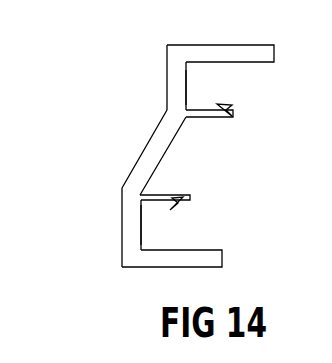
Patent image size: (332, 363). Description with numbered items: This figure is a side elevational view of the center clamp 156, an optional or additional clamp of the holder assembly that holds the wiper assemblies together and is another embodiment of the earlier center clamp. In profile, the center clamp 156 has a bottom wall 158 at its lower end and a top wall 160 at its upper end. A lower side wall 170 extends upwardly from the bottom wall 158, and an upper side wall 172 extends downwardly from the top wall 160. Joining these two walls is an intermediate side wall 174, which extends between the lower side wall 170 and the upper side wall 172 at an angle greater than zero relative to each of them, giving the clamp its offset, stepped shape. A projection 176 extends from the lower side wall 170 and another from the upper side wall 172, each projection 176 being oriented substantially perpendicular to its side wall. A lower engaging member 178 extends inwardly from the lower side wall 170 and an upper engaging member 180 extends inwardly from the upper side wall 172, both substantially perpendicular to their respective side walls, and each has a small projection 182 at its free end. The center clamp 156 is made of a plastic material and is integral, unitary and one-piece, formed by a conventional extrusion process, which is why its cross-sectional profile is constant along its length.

The center clamp 156 is at (171, 158).
The bottom wall 158 is at (170, 267).
The top wall 160 is at (220, 45).
The lower side wall 170 is at (142, 237).
The upper side wall 172 is at (192, 81).
The intermediate side wall 174 is at (145, 148).
The projection 176 is at (145, 220).
The lower engaging member 178 is at (165, 196).
The upper engaging member 180 is at (210, 117).
The insertion arrow 182 is at (178, 203).